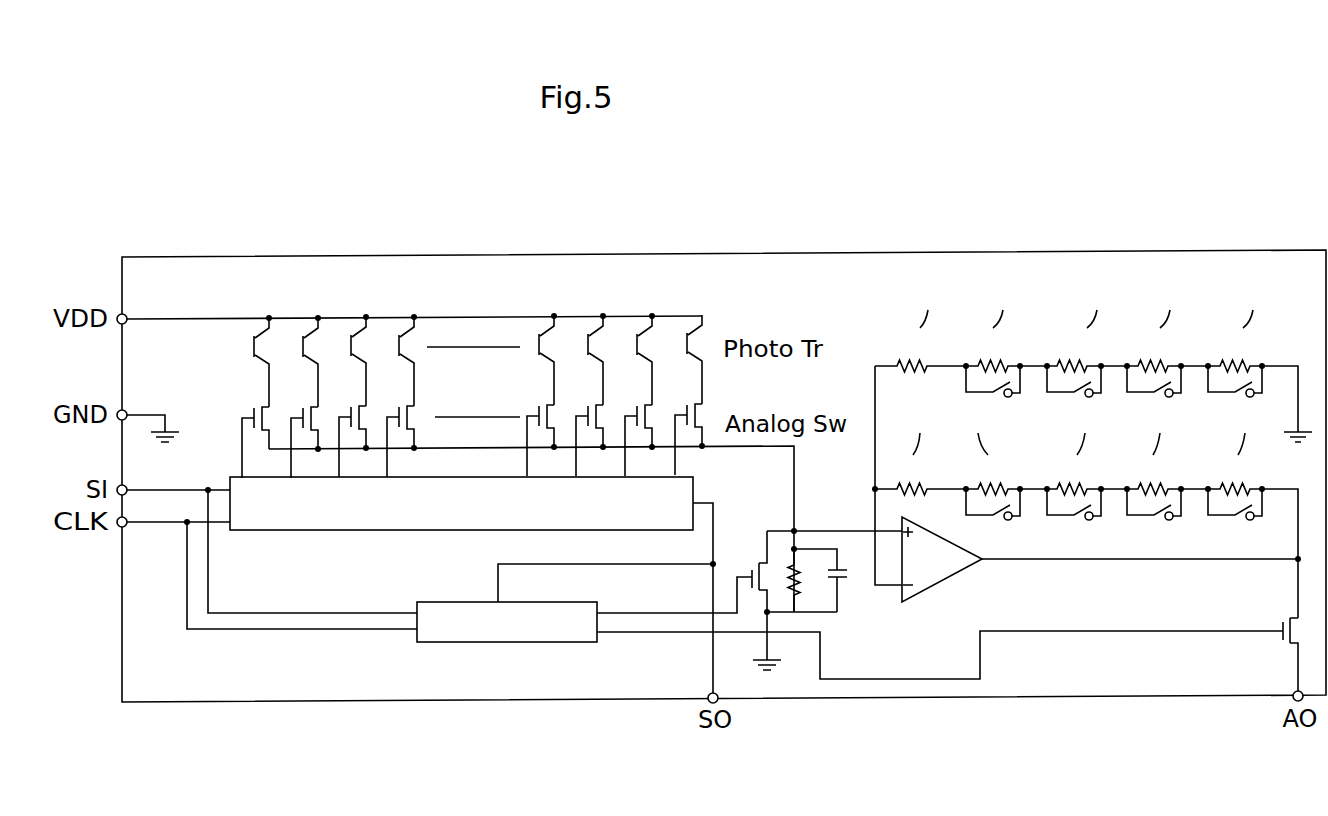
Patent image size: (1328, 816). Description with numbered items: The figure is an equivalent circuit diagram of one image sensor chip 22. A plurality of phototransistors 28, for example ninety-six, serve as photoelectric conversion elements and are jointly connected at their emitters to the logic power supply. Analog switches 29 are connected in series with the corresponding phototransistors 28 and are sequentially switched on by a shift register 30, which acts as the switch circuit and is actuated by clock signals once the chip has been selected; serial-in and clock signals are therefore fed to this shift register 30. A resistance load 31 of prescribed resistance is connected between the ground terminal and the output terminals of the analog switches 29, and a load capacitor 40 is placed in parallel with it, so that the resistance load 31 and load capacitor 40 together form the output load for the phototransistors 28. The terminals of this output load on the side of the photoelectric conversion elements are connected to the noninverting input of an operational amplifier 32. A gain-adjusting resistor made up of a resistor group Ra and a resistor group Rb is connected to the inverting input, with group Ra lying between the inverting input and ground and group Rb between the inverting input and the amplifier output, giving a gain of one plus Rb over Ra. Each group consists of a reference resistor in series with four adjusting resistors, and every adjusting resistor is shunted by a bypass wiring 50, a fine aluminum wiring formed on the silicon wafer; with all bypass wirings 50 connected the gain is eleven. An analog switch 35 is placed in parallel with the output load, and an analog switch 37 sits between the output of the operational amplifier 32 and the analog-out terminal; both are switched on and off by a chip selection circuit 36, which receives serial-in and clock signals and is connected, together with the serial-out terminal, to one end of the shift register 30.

The image sensor chip 22 is at (512, 253).
The phototransistor 28 is at (303, 340).
The analog switch 29 is at (254, 410).
The shift register 30 is at (360, 531).
The resistance load 31 is at (789, 593).
The operational amplifier 32 is at (952, 578).
The analog switch 35 is at (750, 564).
The chip selection circuit 36 is at (525, 642).
The analog switch 37 is at (1283, 623).
The load capacitor 40 is at (831, 568).
The bypass wiring 50 is at (994, 390).
The resistor group Ra is at (1053, 314).
The resistor group Rb is at (1116, 510).